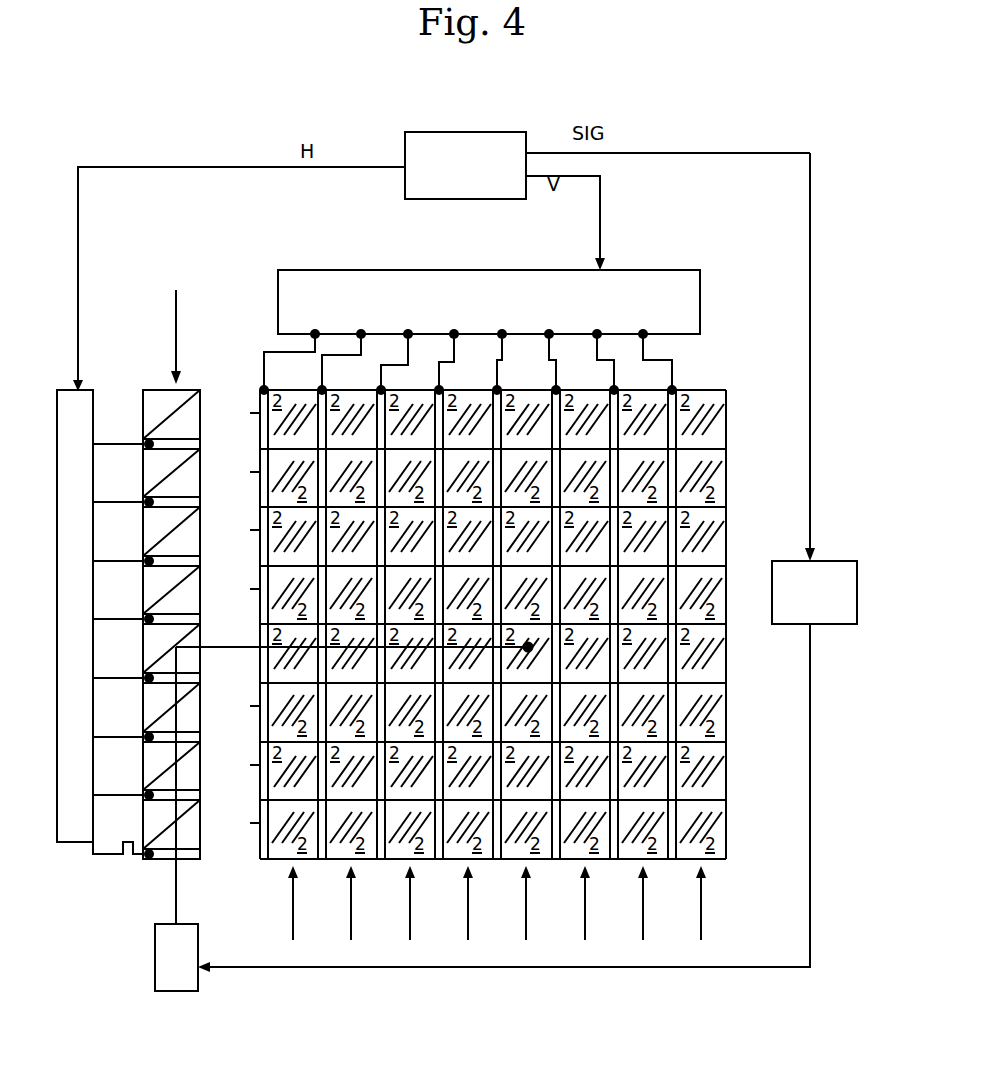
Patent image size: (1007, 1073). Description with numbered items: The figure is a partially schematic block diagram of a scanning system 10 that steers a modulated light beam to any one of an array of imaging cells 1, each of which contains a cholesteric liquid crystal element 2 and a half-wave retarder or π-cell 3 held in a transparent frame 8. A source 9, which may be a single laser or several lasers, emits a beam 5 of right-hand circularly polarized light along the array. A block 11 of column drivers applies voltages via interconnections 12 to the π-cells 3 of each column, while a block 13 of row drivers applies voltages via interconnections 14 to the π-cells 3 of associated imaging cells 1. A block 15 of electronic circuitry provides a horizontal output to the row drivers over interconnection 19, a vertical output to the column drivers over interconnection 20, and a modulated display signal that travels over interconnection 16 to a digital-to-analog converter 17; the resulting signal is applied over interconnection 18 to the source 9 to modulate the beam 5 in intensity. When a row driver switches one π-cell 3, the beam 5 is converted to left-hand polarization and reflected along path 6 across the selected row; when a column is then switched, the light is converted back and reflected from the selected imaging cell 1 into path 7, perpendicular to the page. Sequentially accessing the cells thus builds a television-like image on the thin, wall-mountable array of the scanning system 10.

The imaging cell 1 is at (447, 606).
The cholesteric liquid crystal element 2 is at (424, 624).
The half-wave retarder 3 is at (463, 633).
The beam of circularly polarized electromagnetic energy 5 is at (176, 907).
The reflection path 6 is at (423, 647).
The transmission path 7 is at (528, 650).
The frame 8 is at (512, 624).
The source 9 is at (155, 987).
The scanning system 10 is at (816, 147).
The column drivers block 11 is at (702, 312).
The interconnections 12 is at (492, 594).
The row drivers block 13 is at (56, 728).
The interconnections 14 is at (118, 630).
The electronic circuitry block 15 is at (462, 130).
The interconnection 16 is at (813, 452).
The digital-to-analog converter 17 is at (840, 560).
The interconnection 18 is at (812, 815).
The interconnection 19 is at (236, 163).
The interconnection 20 is at (602, 217).